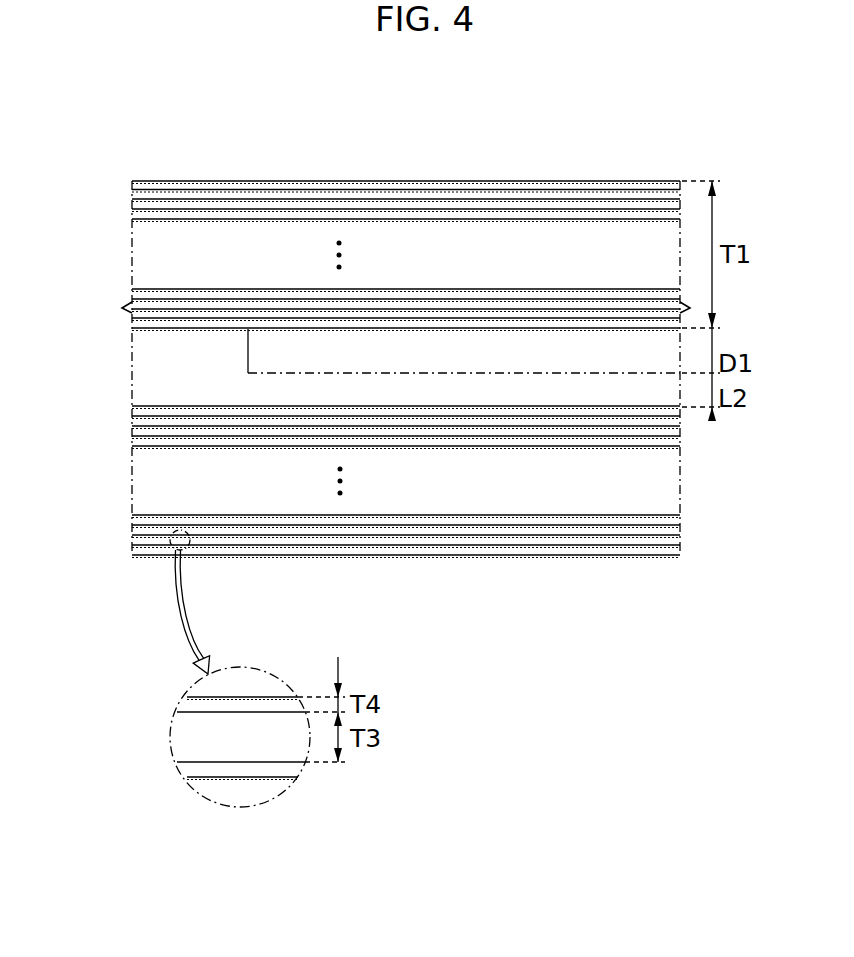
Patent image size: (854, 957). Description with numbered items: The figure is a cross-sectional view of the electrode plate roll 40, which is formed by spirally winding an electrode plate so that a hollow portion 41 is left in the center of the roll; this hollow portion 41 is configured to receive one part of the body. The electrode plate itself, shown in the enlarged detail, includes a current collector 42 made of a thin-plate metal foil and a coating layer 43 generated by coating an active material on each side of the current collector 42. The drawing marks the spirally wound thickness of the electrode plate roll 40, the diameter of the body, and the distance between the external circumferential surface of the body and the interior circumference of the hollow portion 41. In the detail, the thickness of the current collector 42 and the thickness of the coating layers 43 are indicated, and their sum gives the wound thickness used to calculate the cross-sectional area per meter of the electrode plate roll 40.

The electrode plate roll 40 is at (399, 158).
The hollow portion 41 is at (152, 382).
The current collector 42 is at (185, 738).
The coating layer 43 is at (185, 705).